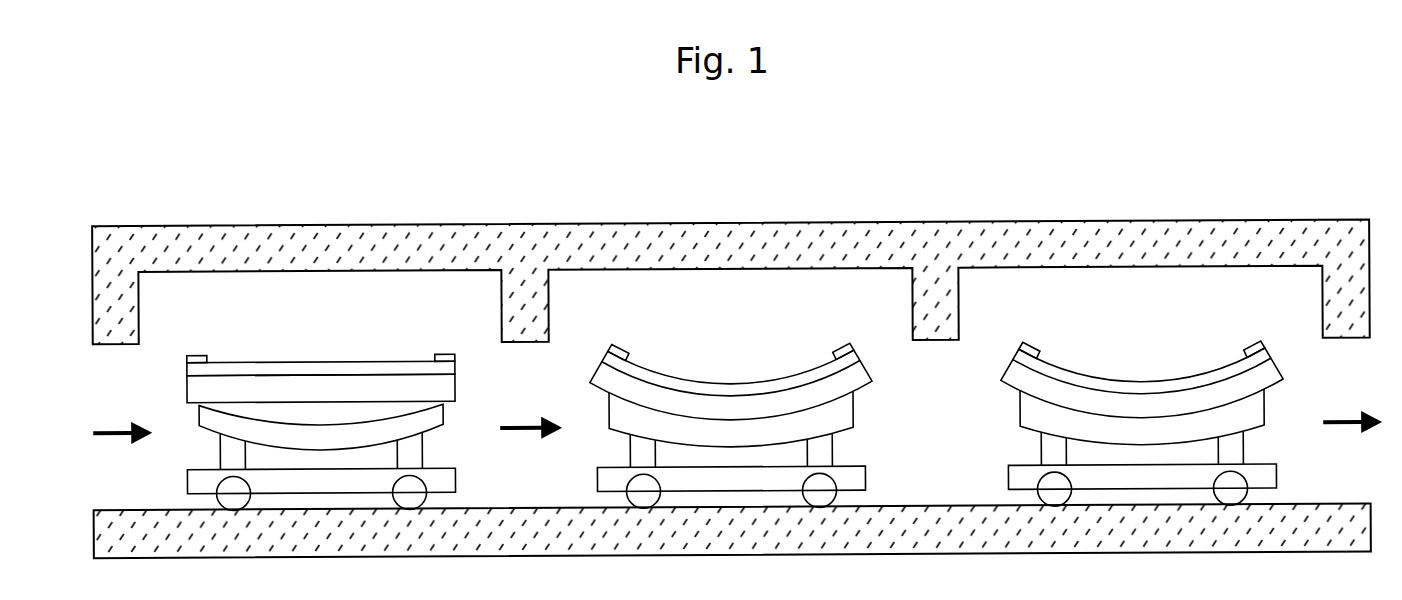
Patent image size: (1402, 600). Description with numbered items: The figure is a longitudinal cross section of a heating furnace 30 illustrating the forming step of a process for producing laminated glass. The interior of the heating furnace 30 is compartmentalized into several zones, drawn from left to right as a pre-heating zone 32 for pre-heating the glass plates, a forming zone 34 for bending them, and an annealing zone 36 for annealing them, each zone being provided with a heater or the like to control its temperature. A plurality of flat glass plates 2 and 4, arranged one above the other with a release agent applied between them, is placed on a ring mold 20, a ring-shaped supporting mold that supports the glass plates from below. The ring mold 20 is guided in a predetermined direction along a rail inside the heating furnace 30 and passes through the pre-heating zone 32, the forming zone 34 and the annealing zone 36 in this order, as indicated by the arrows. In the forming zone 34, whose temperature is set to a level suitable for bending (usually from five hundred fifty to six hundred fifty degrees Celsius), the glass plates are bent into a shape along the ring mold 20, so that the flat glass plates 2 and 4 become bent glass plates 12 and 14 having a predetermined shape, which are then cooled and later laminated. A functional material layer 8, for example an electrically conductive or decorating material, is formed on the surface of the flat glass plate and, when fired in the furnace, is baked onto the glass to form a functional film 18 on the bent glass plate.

The glass plate 2 is at (451, 386).
The glass plate 4 is at (452, 365).
The functional material layer 8 is at (197, 353).
The glass plate 12 is at (862, 384).
The glass plate 14 is at (852, 364).
The functional film 18 is at (621, 349).
The ring mold 20 is at (213, 418).
The heating furnace 30 is at (528, 243).
The pre-heating zone 32 is at (316, 282).
The forming zone 34 is at (727, 280).
The annealing zone 36 is at (1138, 277).